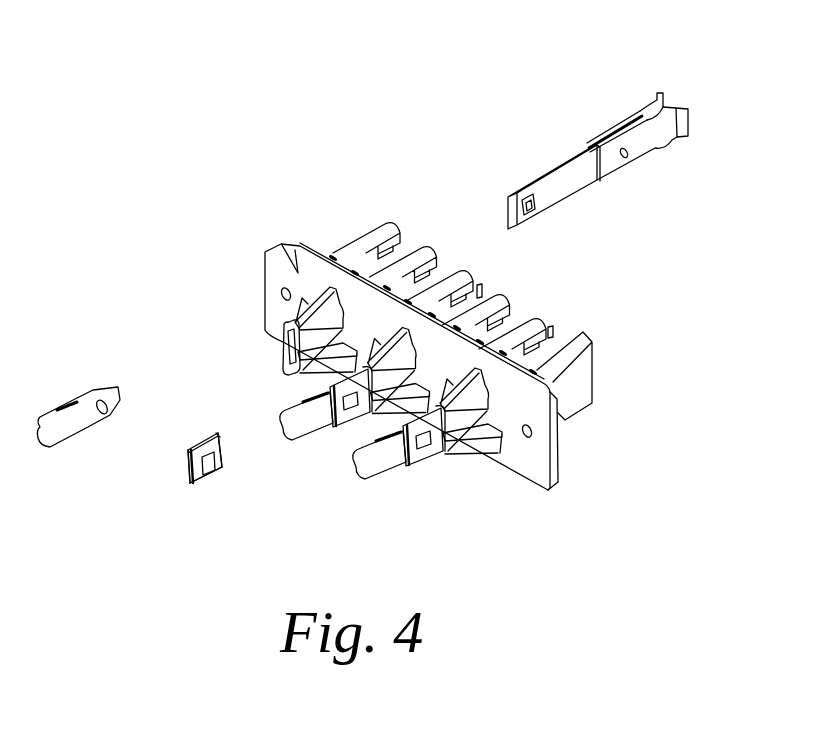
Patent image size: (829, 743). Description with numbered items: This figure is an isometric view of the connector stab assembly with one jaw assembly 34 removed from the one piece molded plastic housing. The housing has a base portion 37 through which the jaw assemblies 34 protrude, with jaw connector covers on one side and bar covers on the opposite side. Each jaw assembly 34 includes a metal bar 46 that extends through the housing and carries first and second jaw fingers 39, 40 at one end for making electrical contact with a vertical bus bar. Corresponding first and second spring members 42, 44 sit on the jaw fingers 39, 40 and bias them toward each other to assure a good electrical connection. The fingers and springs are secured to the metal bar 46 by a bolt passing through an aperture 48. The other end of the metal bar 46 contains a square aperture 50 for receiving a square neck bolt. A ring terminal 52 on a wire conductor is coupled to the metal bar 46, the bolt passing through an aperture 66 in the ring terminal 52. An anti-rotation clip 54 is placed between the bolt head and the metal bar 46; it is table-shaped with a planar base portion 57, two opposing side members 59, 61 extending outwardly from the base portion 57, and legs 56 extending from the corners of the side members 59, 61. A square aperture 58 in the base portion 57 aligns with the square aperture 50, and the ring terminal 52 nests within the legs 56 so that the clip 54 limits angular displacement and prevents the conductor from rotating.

The jaw assembly 34 is at (620, 149).
The base portion 37 is at (555, 478).
The first jaw finger 39 is at (662, 90).
The second jaw finger 40 is at (691, 110).
The first spring member 42 is at (633, 110).
The second spring member 44 is at (667, 150).
The metal bar 46 is at (542, 175).
The aperture 48 is at (630, 157).
The square aperture 50 is at (532, 213).
The ring terminal 52 is at (226, 410).
The anti-rotation clip 54 is at (287, 456).
The legs 56 is at (208, 435).
The planar base portion 57 is at (220, 452).
The square aperture 58 is at (217, 468).
The side member 59 is at (207, 438).
The side member 61 is at (190, 482).
The aperture 66 is at (116, 401).